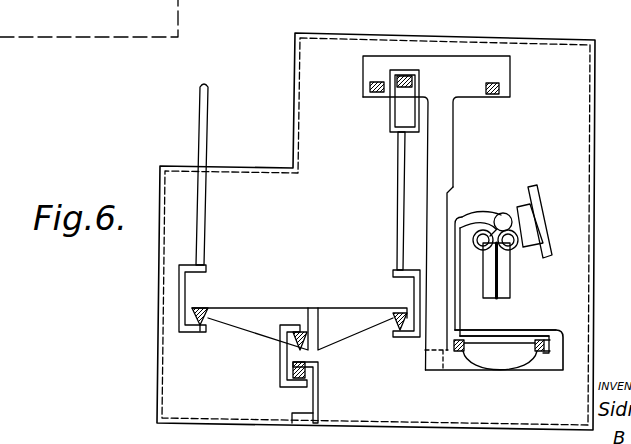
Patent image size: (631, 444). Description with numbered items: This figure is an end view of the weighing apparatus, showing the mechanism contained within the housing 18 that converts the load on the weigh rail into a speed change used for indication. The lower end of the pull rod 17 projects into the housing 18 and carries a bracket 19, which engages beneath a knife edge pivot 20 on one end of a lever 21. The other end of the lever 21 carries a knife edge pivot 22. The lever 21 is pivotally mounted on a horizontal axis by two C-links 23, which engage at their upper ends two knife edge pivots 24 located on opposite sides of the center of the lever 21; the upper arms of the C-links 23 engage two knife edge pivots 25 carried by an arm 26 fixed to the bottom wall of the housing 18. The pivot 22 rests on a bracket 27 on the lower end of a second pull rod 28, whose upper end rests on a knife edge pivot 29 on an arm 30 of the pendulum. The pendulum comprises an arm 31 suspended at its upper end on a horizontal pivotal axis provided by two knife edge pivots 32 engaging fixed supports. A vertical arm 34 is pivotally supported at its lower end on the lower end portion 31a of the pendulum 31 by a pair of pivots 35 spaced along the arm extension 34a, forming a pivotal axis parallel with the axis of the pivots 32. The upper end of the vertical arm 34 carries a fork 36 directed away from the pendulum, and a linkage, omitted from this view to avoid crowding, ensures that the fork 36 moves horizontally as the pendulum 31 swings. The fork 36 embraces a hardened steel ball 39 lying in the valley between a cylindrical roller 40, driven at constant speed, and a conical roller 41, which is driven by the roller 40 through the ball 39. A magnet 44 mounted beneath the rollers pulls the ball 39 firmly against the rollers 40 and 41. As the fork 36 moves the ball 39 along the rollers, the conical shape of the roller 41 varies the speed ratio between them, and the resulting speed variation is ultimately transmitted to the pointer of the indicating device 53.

The pull rod 17 is at (200, 108).
The housing 18 is at (323, 32).
The bracket 19 is at (185, 287).
The knife edge pivot 20 is at (198, 326).
The lever 21 is at (263, 311).
The knife edge pivot 22 is at (395, 313).
The C-links 23 is at (280, 360).
The knife edge pivots 24 is at (297, 328).
The knife edge pivots 25 is at (292, 373).
The arm 26 is at (318, 395).
The bracket 27 is at (410, 322).
The pull rod 28 is at (398, 157).
The knife edge pivot 29 is at (404, 76).
The arm 30 is at (371, 67).
The pendulum arm 31 is at (447, 137).
The lower end portion of the pendulum 31a is at (538, 365).
The knife edge pivots 32 is at (368, 88).
The vertical arm 34 is at (457, 313).
The arm extension 34a is at (508, 339).
The pivots 35 is at (482, 372).
The fork 36 is at (472, 212).
The ball 39 is at (498, 211).
The roller 40 is at (481, 250).
The roller 41 is at (512, 250).
The magnet 44 is at (510, 291).
The indicating device 53 is at (536, 193).